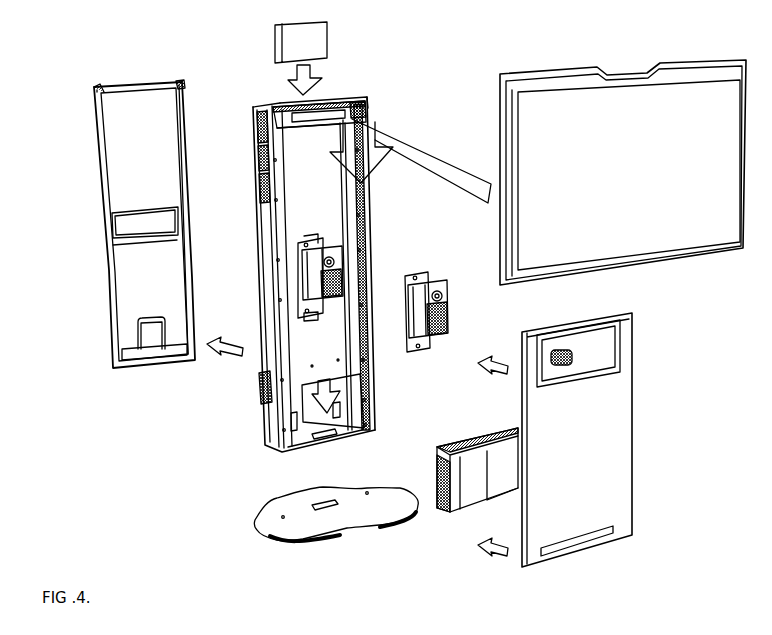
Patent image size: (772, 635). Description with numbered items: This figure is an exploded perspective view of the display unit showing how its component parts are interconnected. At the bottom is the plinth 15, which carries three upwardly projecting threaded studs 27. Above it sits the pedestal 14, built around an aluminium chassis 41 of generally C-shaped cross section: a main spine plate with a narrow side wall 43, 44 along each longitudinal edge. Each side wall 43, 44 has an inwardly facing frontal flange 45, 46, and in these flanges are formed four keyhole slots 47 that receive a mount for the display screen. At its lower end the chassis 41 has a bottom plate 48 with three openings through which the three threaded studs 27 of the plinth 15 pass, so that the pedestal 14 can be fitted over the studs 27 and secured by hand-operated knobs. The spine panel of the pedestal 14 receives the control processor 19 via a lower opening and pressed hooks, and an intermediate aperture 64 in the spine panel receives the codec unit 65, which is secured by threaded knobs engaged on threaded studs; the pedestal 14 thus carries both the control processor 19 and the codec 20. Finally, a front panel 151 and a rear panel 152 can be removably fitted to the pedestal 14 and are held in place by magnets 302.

The pedestal 14 is at (258, 275).
The rear panel 152 is at (133, 142).
The magnets 302 is at (95, 93).
The side wall 43 is at (267, 207).
The frontal flange 45 is at (282, 343).
The keyhole slots 47 is at (262, 105).
The aluminium chassis 41 is at (307, 360).
The intermediate aperture 64 is at (318, 190).
The frontal flange 46 is at (368, 360).
The bottom plate 48 is at (300, 440).
The side wall 44 is at (367, 268).
The codec 20 is at (297, 275).
The codec unit 65 is at (448, 303).
The front panel 151 is at (600, 399).
The control processor 19 is at (475, 442).
The plinth 15 is at (307, 523).
The threaded studs 27 is at (283, 517).